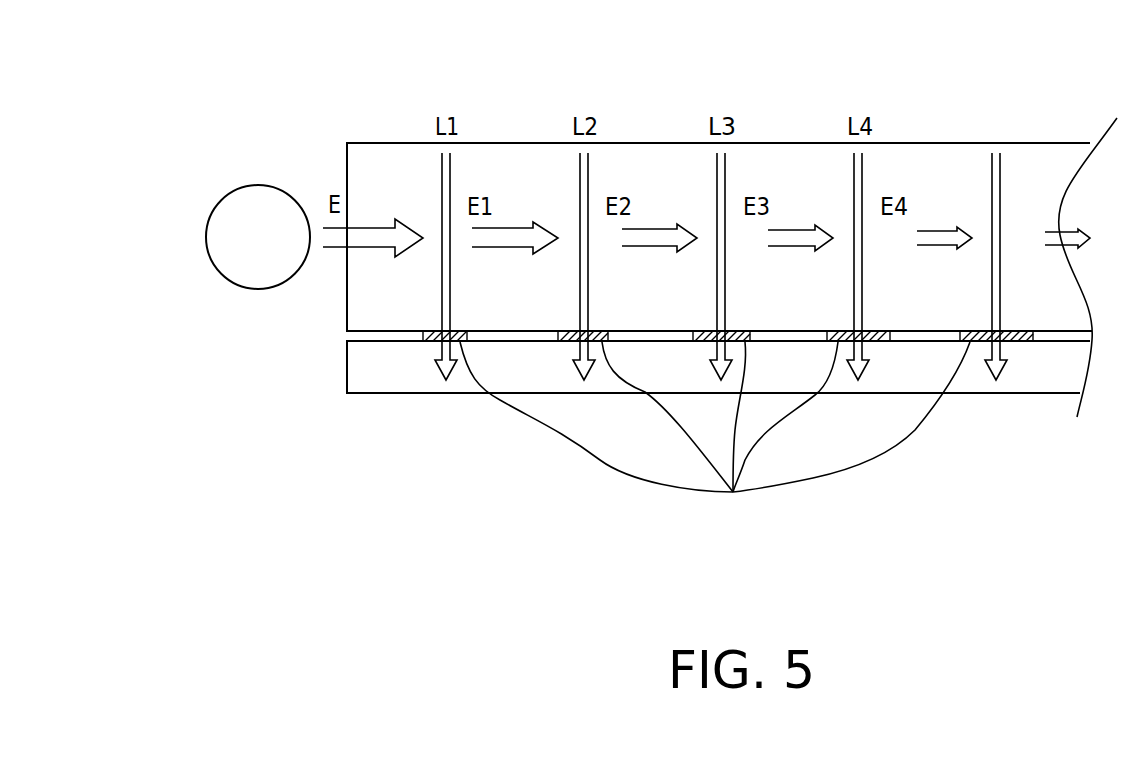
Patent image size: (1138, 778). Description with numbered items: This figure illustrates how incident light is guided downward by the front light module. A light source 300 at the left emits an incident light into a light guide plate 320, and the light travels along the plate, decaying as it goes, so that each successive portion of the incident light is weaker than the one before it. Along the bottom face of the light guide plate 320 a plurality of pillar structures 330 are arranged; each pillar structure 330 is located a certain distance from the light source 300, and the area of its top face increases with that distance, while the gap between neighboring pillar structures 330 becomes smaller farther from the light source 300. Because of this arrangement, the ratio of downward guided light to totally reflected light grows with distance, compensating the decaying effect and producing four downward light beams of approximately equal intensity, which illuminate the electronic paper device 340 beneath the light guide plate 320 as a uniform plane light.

The light source 300 is at (250, 203).
The light guide plate 320 is at (383, 167).
The pillar structures 330 is at (733, 492).
The electronic paper device 340 is at (405, 347).